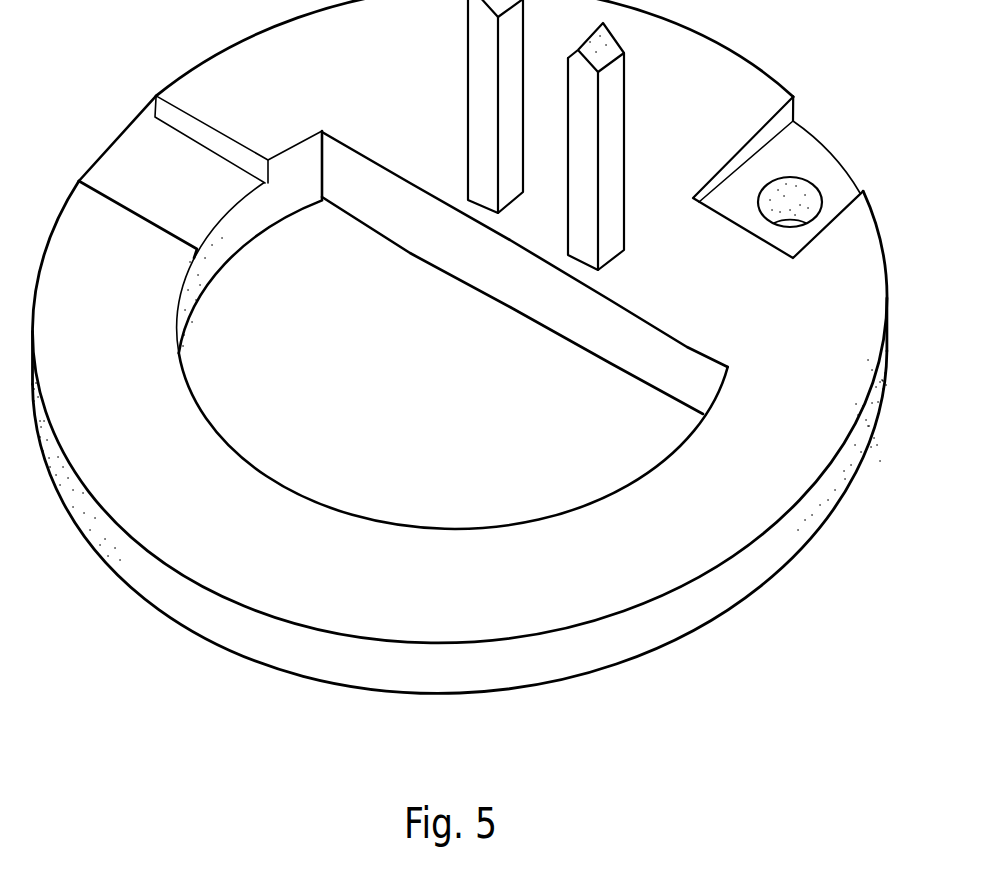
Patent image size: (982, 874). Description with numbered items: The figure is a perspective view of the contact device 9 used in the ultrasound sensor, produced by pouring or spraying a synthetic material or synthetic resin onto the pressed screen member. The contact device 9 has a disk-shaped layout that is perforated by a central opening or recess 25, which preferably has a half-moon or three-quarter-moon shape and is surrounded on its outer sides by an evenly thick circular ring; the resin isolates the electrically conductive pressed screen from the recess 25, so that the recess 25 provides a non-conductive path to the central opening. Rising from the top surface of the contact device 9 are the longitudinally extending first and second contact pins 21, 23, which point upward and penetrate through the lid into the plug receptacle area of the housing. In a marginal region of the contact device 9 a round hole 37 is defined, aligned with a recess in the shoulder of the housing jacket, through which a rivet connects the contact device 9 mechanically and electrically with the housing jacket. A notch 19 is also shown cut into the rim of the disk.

The contact device 9 is at (266, 702).
The notch 19 is at (152, 157).
The first contact pin 21 is at (487, 78).
The second contact pin 23 is at (626, 135).
The recess 25 is at (466, 432).
The round hole 37 is at (797, 200).